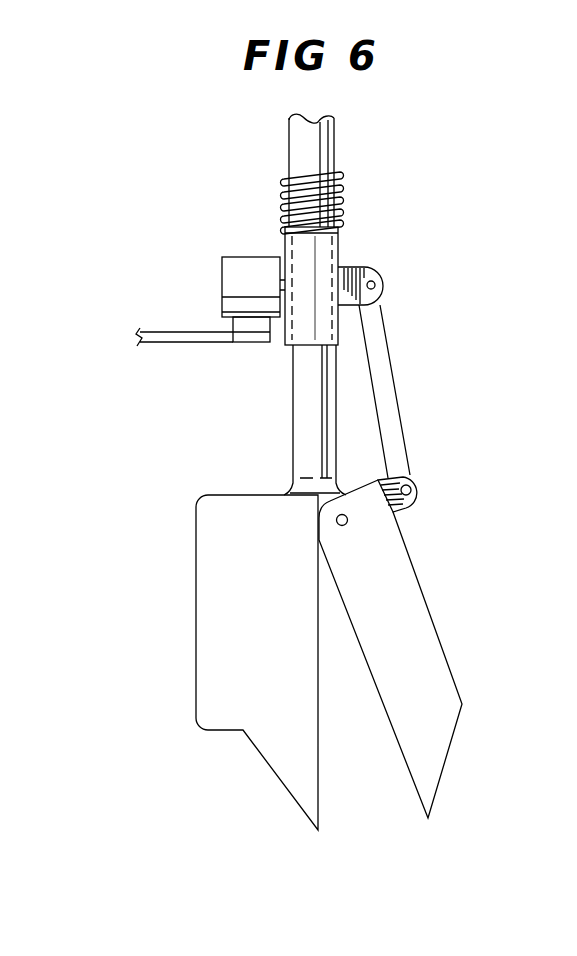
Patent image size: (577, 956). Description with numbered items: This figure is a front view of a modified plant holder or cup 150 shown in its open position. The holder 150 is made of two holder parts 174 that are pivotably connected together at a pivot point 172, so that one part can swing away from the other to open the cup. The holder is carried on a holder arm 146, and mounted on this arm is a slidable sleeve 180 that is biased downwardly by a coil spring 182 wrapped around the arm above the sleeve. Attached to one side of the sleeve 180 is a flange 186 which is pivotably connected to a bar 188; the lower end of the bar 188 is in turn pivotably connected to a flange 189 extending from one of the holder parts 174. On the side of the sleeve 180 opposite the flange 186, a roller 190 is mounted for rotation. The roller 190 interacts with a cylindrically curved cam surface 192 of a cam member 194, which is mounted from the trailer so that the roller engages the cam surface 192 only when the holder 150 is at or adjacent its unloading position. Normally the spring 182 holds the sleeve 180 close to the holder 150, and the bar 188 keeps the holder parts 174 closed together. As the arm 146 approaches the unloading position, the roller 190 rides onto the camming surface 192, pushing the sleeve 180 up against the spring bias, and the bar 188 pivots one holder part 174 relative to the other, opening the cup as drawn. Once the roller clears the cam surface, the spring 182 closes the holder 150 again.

The holder arm 146 is at (289, 132).
The coil spring 182 is at (287, 197).
The slidable sleeve 180 is at (340, 238).
The flange 186 is at (383, 276).
The bar 188 is at (392, 360).
The flange 189 is at (424, 480).
The holder parts 174 is at (424, 603).
The pivot point 172 is at (338, 525).
The plant holder 150 is at (196, 653).
The roller 190 is at (222, 284).
The cam surface 192 is at (252, 345).
The cam member 194 is at (164, 345).